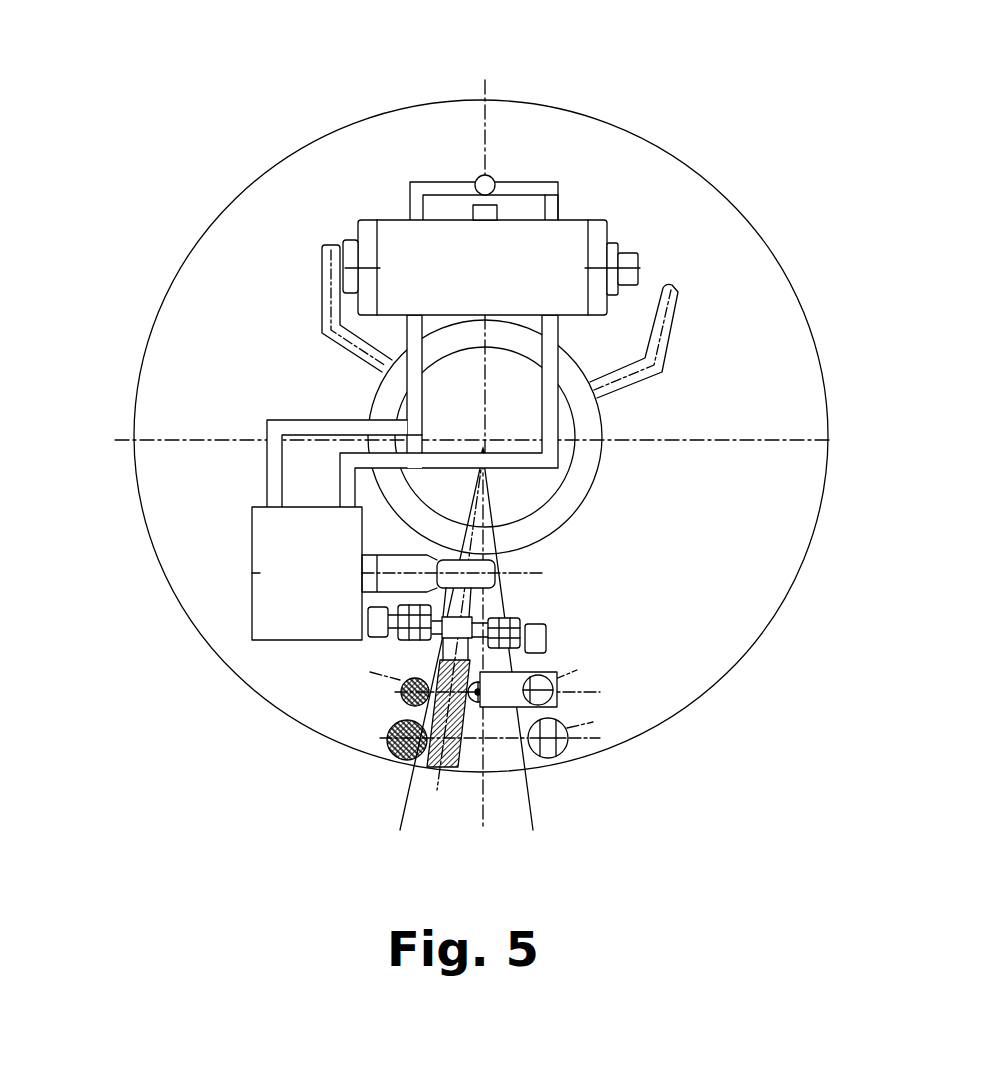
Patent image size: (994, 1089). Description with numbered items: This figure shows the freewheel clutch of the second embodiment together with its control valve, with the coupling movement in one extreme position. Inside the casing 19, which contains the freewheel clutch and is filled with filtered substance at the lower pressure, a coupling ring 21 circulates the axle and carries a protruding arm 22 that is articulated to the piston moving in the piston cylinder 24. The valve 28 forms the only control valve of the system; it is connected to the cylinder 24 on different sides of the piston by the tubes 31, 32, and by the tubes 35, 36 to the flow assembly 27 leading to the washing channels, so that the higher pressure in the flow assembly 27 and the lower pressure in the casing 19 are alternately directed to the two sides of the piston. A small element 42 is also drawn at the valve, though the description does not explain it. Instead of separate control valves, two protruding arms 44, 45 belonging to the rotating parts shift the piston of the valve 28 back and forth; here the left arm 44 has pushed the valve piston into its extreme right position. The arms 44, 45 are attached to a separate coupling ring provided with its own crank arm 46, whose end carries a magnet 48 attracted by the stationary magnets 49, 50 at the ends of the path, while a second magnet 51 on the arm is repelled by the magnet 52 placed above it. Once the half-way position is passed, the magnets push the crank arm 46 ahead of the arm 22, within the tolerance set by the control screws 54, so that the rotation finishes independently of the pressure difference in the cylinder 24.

The casing 19 is at (818, 522).
The coupling ring 21 is at (592, 490).
The arm 22 is at (505, 597).
The piston cylinder 24 is at (252, 605).
The flow assembly 27 is at (490, 180).
The valve 28 is at (387, 220).
The tube 31 is at (340, 483).
The tube 32 is at (263, 455).
The tube 35 is at (556, 197).
The tube 36 is at (440, 182).
The stud 42 is at (505, 200).
The left arm 44 is at (320, 278).
The right arm 45 is at (680, 312).
The crank arm 46 is at (437, 640).
The magnet 48 is at (460, 745).
The magnet 49 is at (395, 745).
The magnet 50 is at (560, 745).
The second magnet 51 is at (430, 765).
The repelling magnet 52 is at (485, 705).
The control screws 54 is at (373, 605).